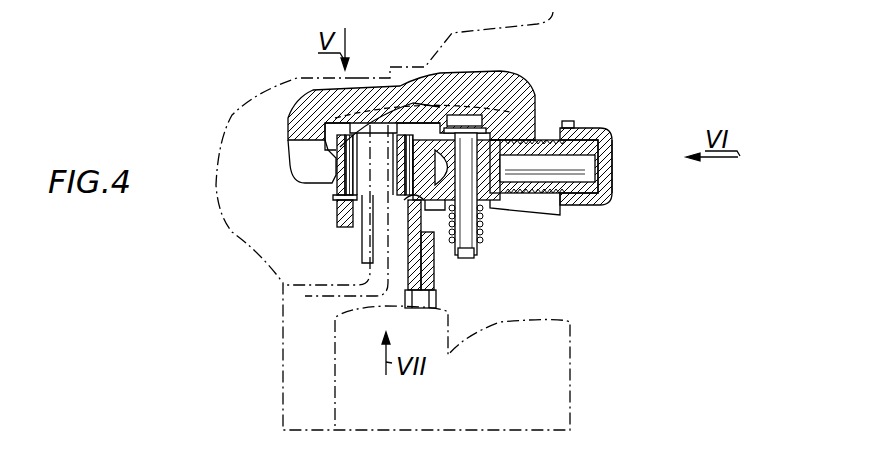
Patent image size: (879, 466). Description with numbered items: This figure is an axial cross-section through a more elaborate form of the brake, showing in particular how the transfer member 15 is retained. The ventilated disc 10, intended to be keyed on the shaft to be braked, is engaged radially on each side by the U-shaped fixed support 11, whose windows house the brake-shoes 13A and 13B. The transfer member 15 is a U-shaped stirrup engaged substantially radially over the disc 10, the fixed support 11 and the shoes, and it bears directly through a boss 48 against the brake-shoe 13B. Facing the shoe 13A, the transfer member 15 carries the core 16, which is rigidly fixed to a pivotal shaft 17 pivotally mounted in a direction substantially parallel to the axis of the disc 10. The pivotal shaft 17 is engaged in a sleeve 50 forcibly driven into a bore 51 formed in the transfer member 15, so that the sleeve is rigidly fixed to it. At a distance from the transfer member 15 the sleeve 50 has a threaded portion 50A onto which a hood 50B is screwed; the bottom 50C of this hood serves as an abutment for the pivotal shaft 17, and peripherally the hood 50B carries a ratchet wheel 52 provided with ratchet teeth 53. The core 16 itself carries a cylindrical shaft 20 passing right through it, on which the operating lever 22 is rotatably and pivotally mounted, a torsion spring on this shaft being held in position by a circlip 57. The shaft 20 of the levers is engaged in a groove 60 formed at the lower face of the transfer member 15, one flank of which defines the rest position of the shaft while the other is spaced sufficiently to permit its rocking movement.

The disc 10 is at (360, 247).
The fixed support 11 is at (336, 226).
The brake-shoe 13A is at (384, 118).
The brake-shoe 13B is at (330, 150).
The transfer member 15 is at (485, 70).
The core 16 is at (512, 145).
The pivotal shaft 17 is at (537, 180).
The cylindrical shaft 20 is at (465, 257).
The operating lever 22 is at (432, 205).
The boss 48 is at (340, 186).
The sleeve 50 is at (528, 148).
The threaded portion 50A is at (555, 202).
The hood 50B is at (598, 130).
The bottom of the hood 50C is at (612, 165).
The bore 51 is at (508, 200).
The ratchet wheel 52 is at (565, 122).
The ratchet teeth 53 is at (570, 198).
The circlip 57 is at (482, 235).
The groove 60 is at (445, 120).